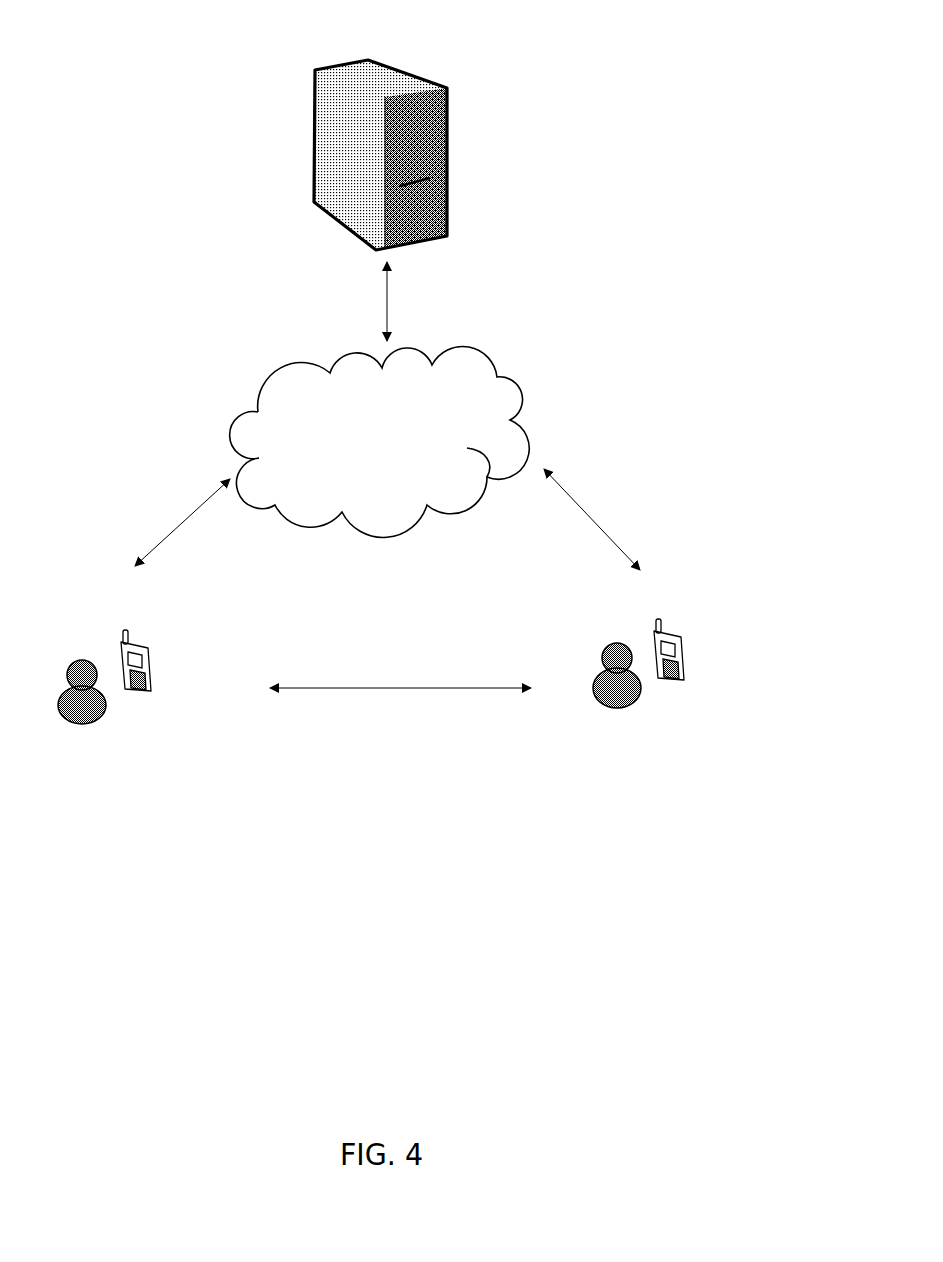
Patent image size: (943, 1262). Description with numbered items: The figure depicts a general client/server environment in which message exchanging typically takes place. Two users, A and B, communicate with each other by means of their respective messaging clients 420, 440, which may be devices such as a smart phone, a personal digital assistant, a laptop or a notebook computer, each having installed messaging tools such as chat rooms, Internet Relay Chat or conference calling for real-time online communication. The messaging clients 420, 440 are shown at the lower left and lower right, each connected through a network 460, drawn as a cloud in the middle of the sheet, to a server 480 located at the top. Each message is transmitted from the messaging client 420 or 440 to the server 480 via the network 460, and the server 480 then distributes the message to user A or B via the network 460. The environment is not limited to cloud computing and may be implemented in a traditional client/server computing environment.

The server 480 is at (445, 83).
The network 460 is at (477, 352).
The messaging client 420 is at (165, 638).
The messaging client 440 is at (705, 630).